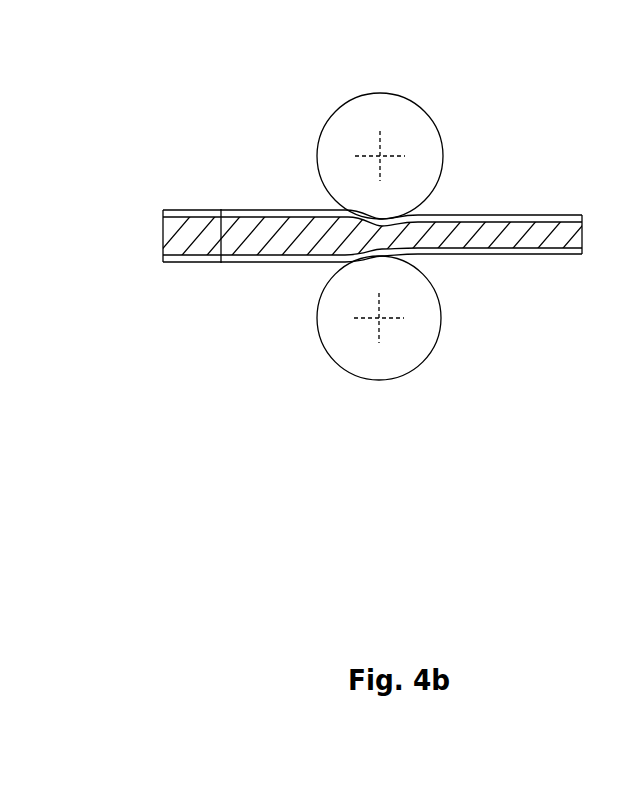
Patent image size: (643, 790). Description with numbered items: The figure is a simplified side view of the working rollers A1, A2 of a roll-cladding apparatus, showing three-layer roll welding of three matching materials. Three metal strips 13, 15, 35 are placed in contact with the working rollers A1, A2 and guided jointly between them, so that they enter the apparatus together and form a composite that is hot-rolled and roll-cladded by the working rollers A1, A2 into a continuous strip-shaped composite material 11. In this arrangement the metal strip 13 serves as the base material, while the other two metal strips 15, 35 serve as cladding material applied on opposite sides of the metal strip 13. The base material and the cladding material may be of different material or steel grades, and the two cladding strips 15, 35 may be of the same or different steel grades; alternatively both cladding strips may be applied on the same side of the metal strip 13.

The strip-shaped composite material 11 is at (552, 178).
The metal strip 13 is at (162, 236).
The metal strip 15 is at (221, 209).
The metal strip 35 is at (221, 263).
The working roller A1 is at (427, 332).
The working roller A2 is at (422, 130).